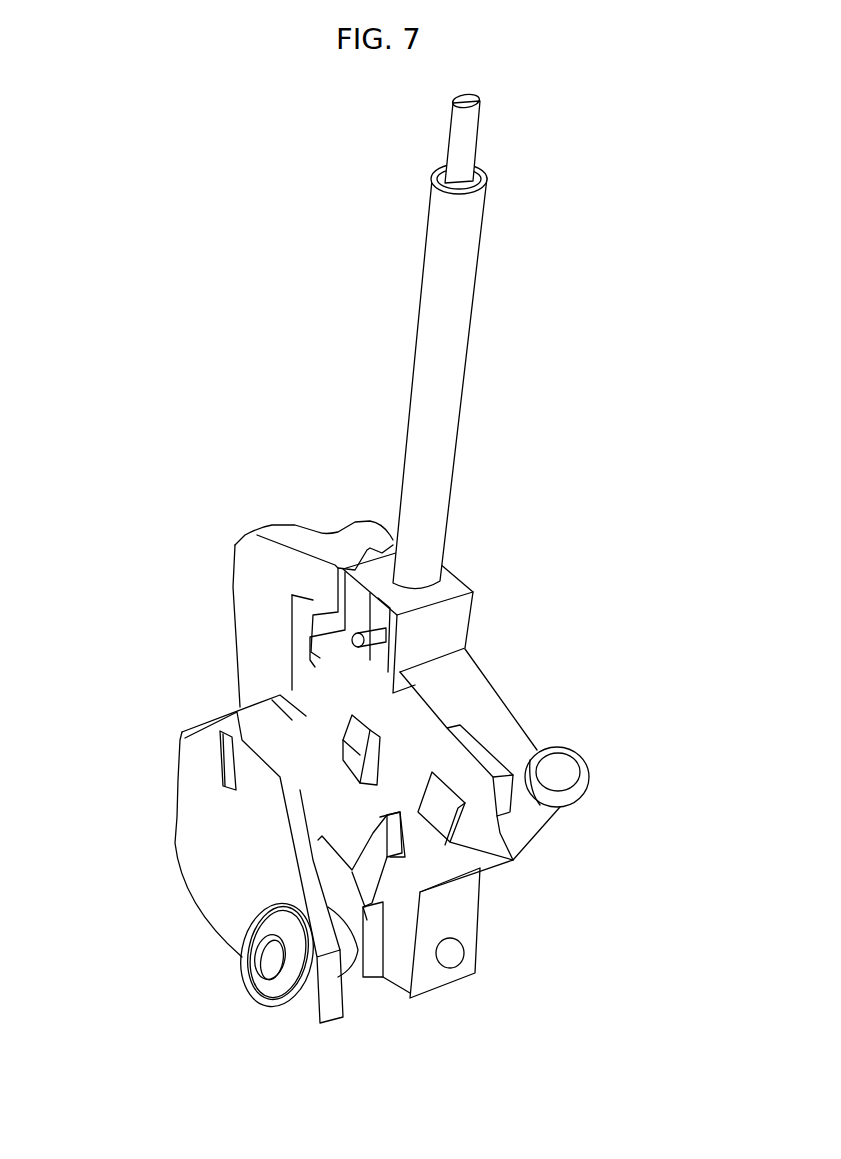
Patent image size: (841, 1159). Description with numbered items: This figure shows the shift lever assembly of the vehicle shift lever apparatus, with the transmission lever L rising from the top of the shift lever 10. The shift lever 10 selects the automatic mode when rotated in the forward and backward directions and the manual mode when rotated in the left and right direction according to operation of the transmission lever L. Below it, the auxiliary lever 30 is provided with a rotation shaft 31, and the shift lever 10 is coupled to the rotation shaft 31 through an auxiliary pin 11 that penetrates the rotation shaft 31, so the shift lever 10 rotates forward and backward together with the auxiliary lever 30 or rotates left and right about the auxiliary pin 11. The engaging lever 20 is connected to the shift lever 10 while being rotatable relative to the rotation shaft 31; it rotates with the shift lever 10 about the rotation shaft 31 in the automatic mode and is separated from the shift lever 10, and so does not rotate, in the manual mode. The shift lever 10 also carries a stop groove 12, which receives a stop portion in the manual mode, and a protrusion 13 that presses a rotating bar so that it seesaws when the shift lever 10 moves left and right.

The transmission lever L is at (447, 402).
The shift lever 10 is at (415, 867).
The auxiliary pin 11 is at (450, 958).
The stop groove 12 is at (355, 743).
The protrusion 13 is at (438, 815).
The engaging lever 20 is at (205, 796).
The auxiliary lever 30 is at (342, 890).
The rotation shaft 31 is at (272, 960).